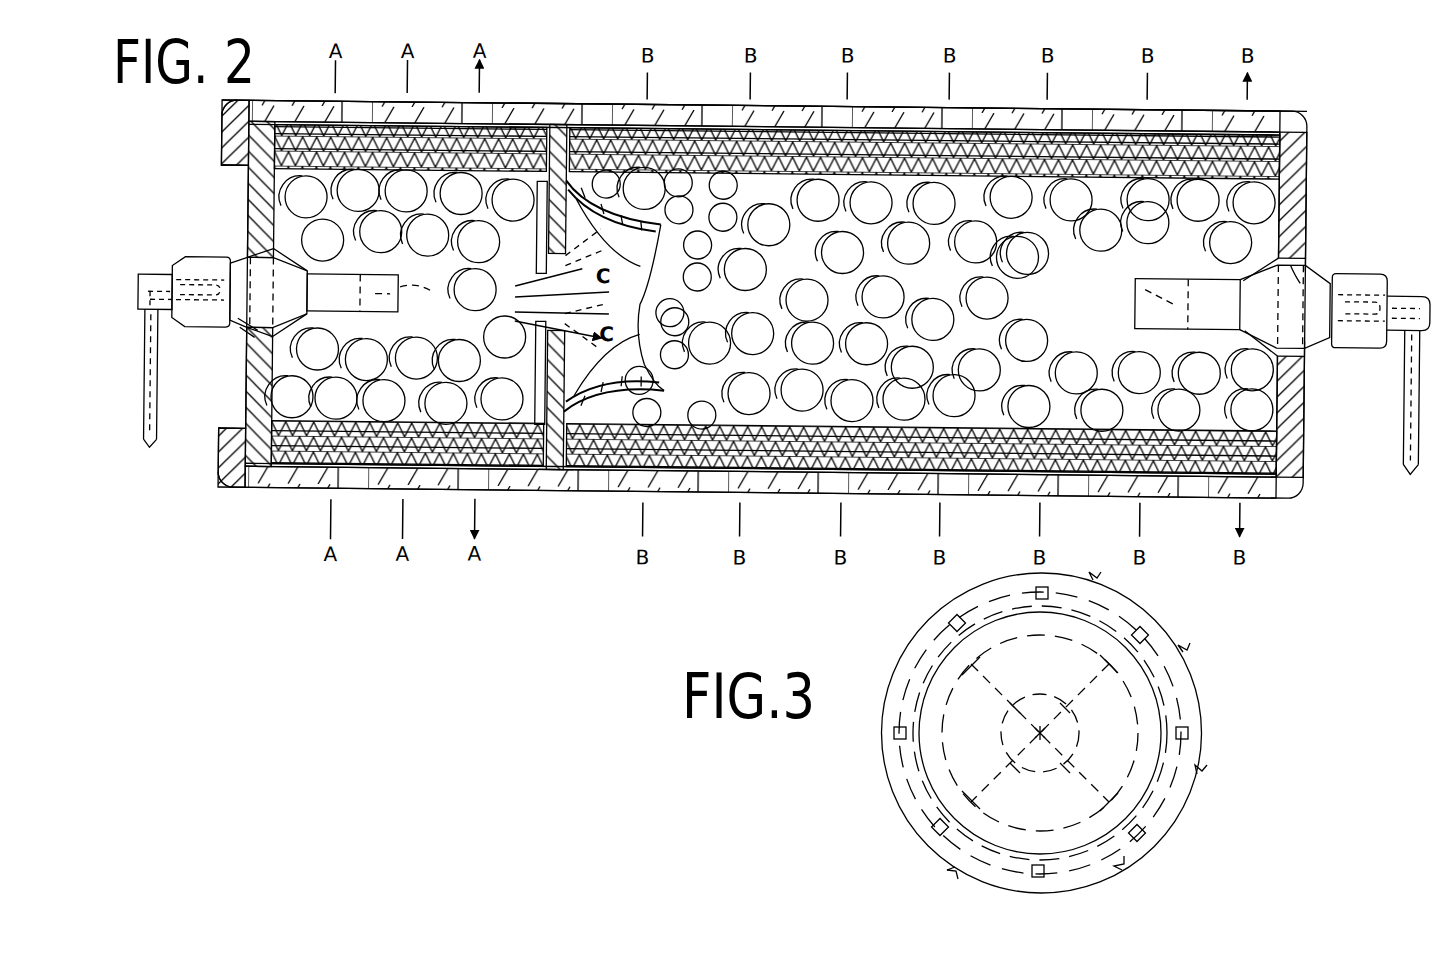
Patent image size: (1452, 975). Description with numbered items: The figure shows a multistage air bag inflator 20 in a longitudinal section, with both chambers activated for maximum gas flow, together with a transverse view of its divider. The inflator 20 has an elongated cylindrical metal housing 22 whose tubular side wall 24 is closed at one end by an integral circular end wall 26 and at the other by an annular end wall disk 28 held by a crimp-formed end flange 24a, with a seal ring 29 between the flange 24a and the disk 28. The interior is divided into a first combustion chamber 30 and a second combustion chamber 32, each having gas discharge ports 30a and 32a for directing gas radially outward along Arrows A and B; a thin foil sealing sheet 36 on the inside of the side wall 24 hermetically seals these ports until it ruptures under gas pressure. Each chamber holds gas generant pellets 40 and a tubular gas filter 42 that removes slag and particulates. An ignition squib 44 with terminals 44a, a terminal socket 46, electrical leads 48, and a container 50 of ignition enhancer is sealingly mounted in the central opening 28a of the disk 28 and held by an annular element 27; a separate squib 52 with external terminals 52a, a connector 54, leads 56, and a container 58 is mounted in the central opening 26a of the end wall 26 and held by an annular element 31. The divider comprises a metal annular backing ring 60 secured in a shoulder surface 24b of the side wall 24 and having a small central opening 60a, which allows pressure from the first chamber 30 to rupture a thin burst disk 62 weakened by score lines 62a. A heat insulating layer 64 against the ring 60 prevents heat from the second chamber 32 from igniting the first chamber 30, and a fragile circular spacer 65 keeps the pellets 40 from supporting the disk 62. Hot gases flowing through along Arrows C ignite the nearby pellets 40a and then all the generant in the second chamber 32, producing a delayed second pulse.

In FIG. 2, the multistage air bag inflator 20 is at (520, 560).
In FIG. 2, the housing 22 is at (232, 490).
In FIG. 2, the tubular side wall 24 is at (888, 105).
In FIG. 2, the end flange 24a is at (222, 118).
In FIG. 2, the shoulder surface 24b is at (550, 472).
In FIG. 2, the end wall 26 is at (1290, 422).
In FIG. 2, the central opening 26a is at (1290, 408).
In FIG. 2, the annular element 27 is at (248, 258).
In FIG. 2, the end wall disk 28 is at (258, 186).
In FIG. 2, the central opening 28a is at (255, 340).
In FIG. 2, the seal ring 29 is at (245, 150).
In FIG. 2, the first combustion chamber 30 is at (372, 487).
In FIG. 2, the gas discharge ports 30a is at (330, 104).
In FIG. 2, the annular element 31 is at (1316, 340).
In FIG. 2, the second combustion chamber 32 is at (700, 480).
In FIG. 2, the gas discharge ports 32a is at (657, 108).
In FIG. 2, the foil sealing sheet 36 is at (288, 466).
In FIG. 2, the gas generant pellets 40 is at (292, 200).
In FIG. 2, the gas generating pellets 40a is at (688, 240).
In FIG. 2, the tubular gas filter 42 is at (1320, 145).
In FIG. 2, the ignition squib 44 is at (240, 325).
In FIG. 2, the electrical terminals 44a is at (198, 280).
In FIG. 2, the terminal socket 46 is at (152, 278).
In FIG. 2, the electrical leads 48 is at (158, 378).
In FIG. 2, the container of ignition enhancing material 50 is at (402, 293).
In FIG. 2, the ignition squib 52 is at (1305, 250).
In FIG. 2, the external terminals 52a is at (1348, 290).
In FIG. 2, the connector 54 is at (1405, 284).
In FIG. 2, the electrical leads 56 is at (1402, 342).
In FIG. 2, the container of ignition enhancing material 58 is at (1133, 293).
In FIG. 2, the annular backing ring 60 is at (555, 122).
In FIG. 3, the annular backing ring 60 is at (885, 782).
In FIG. 2, the central opening 60a is at (540, 276).
In FIG. 3, the central opening 60a is at (1072, 745).
In FIG. 2, the burst disk 62 is at (593, 235).
In FIG. 3, the burst disk 62 is at (1160, 695).
In FIG. 3, the score lines 62a is at (1040, 733).
In FIG. 2, the heat insulating layer 64 is at (504, 337).
In FIG. 2, the circular spacer 65 is at (652, 384).
In FIG. 3, the circular spacer 65 is at (1150, 634).